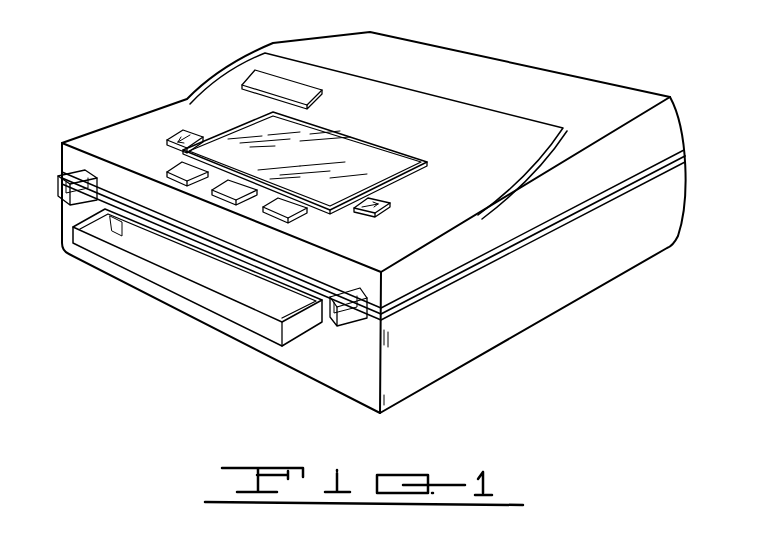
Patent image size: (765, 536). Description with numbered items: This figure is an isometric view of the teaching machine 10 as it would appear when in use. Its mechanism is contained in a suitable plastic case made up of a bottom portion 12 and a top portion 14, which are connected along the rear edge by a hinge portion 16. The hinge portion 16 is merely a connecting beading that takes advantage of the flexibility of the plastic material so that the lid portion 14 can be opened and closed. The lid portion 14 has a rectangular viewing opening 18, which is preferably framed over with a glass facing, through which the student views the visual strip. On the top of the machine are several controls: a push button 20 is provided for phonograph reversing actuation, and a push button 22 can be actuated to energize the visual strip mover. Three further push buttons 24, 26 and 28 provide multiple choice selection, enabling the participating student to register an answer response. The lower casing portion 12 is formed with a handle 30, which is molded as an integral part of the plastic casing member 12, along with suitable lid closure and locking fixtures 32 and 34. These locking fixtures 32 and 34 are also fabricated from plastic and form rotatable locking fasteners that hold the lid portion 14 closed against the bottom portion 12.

The teaching machine 10 is at (181, 49).
The bottom portion 12 is at (667, 221).
The top portion 14 is at (663, 122).
The hinge portion 16 is at (686, 157).
The viewing opening 18 is at (344, 157).
The push button 20 is at (186, 134).
The push button 22 is at (393, 198).
The push button 24 is at (183, 167).
The push button 26 is at (237, 191).
The push button 28 is at (290, 210).
The handle 30 is at (137, 272).
The lid closure and locking fixture 32 is at (352, 322).
The lid closure and locking fixture 34 is at (58, 193).